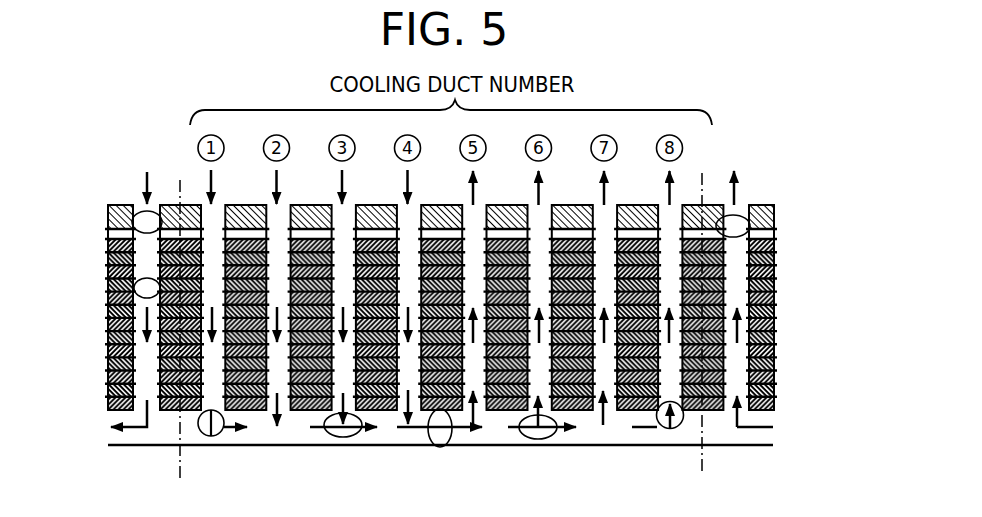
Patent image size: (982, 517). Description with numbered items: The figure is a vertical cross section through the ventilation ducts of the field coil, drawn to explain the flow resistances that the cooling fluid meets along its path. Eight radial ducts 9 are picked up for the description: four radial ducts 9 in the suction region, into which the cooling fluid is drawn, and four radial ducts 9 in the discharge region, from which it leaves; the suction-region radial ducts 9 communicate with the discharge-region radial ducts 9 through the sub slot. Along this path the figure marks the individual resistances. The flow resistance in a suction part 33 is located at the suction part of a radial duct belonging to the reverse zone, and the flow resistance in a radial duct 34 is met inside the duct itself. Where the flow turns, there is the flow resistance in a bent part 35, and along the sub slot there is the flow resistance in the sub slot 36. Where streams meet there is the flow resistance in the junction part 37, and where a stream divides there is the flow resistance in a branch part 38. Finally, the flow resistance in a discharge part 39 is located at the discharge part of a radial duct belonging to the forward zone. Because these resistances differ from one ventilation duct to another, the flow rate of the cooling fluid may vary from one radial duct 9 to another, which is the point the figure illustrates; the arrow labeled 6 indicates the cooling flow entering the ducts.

The cooling medium flow 6 is at (147, 174).
The radial duct 9 is at (745, 285).
The flow resistance in a suction part 33 is at (110, 216).
The flow resistance in a radial duct 34 is at (110, 284).
The flow resistance in a bent part 35 is at (211, 437).
The flow resistance in the sub slot 36 is at (440, 448).
The flow resistance in the junction part 37 is at (343, 437).
The flow resistance in a branch part 38 is at (538, 440).
The flow resistance in a discharge part 39 is at (737, 215).